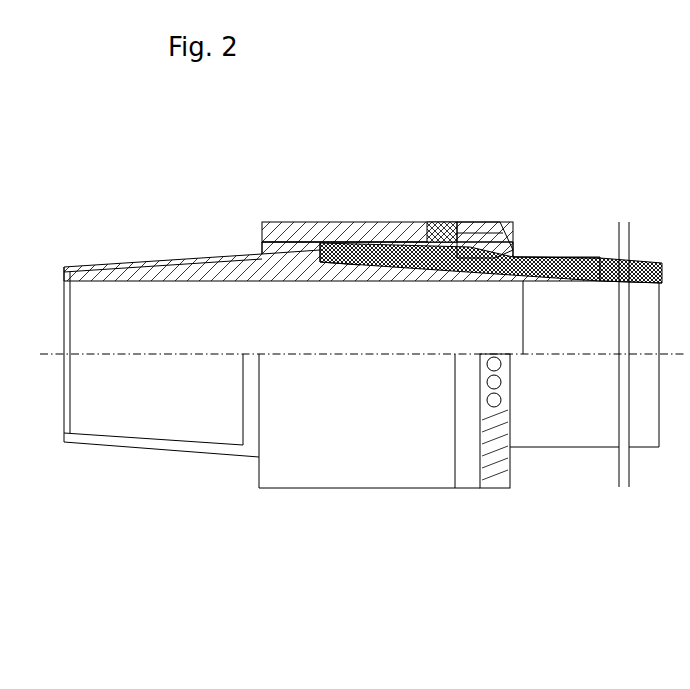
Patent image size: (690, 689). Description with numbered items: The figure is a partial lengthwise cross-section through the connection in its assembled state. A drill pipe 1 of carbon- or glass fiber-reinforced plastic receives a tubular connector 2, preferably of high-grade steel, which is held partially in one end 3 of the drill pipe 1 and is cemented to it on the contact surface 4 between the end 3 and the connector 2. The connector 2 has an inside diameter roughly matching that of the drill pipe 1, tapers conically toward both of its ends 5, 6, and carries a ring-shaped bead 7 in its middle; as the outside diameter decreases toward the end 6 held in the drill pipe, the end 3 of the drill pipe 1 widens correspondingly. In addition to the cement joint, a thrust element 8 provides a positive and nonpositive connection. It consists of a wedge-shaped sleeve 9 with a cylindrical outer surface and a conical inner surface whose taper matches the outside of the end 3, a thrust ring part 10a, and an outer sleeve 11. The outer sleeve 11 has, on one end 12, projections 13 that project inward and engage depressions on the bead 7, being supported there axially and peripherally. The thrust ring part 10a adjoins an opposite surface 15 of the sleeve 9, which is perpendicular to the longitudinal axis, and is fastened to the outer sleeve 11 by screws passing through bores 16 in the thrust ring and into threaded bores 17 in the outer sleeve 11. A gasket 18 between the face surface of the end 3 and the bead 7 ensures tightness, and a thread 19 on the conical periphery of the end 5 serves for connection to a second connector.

The drill pipe 1 is at (606, 265).
The tubular connector 2 is at (195, 273).
The end of the drill pipe 3 is at (347, 258).
The contact surface 4 is at (402, 270).
The end of the connector 5 is at (100, 414).
The end of the connector 6 is at (495, 338).
The ring-shaped bead 7 is at (302, 245).
The thrust element 8 is at (500, 219).
The wedge-shaped sleeve 9 is at (437, 232).
The thrust ring part 10a is at (500, 252).
The outer sleeve 11 is at (373, 240).
The end of the outer sleeve 12 is at (268, 230).
The projections 13 is at (262, 243).
The opposite surface 15 is at (458, 250).
The bores 16 is at (500, 387).
The threaded bores 17 is at (445, 242).
The gasket 18 is at (320, 258).
The thread 19 is at (110, 272).